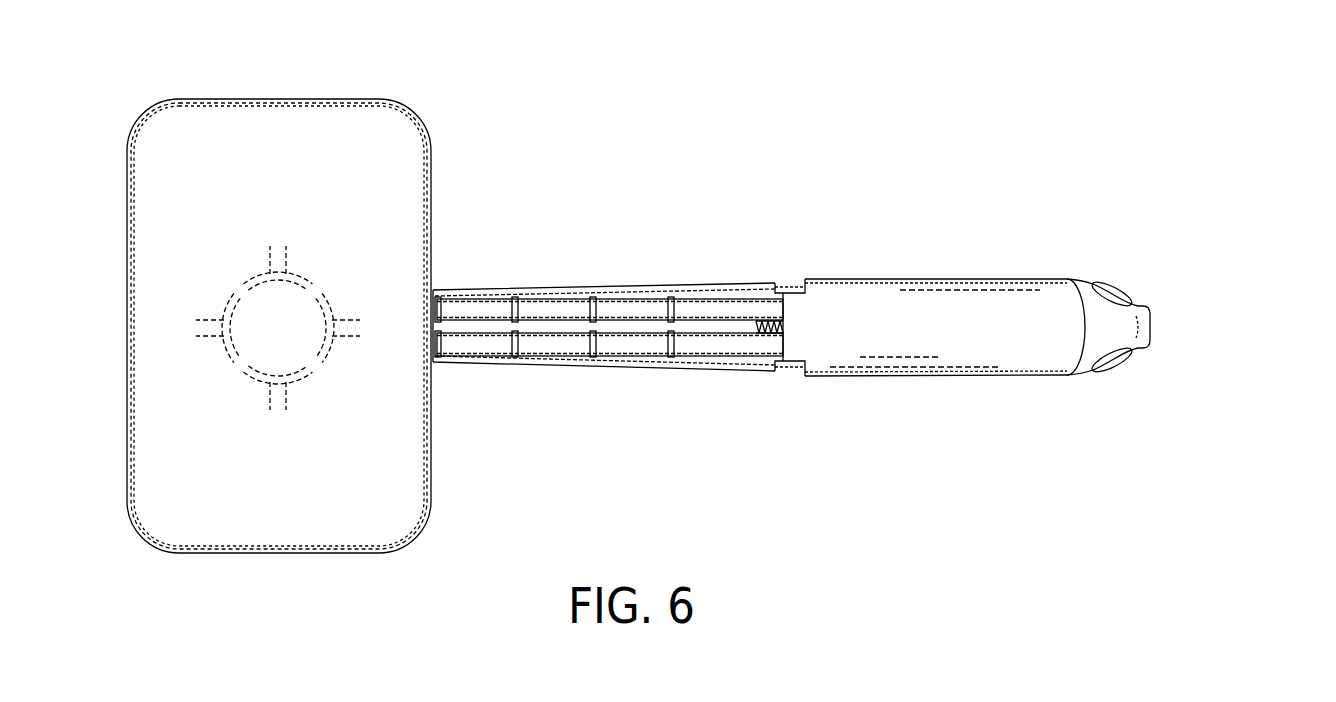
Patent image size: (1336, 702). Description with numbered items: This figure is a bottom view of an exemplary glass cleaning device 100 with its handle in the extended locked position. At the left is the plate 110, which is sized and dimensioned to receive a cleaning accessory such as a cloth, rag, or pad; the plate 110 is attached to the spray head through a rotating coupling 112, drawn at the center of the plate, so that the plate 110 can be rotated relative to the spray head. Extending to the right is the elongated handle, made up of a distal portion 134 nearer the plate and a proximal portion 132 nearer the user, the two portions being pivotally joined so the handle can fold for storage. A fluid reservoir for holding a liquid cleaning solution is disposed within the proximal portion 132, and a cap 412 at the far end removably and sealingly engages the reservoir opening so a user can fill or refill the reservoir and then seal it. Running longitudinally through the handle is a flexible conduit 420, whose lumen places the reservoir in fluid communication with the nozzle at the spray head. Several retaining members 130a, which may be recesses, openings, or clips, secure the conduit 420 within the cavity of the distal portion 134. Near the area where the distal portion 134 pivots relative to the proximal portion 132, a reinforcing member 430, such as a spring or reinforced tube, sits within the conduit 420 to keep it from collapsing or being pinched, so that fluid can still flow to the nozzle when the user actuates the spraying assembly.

The glass cleaning device 100 is at (333, 34).
The plate 110 is at (395, 110).
The rotating coupling 112 is at (315, 277).
The retaining members 130a is at (671, 298).
The distal portion 134 is at (467, 364).
The conduit 420 is at (702, 318).
The reinforcing member 430 is at (753, 322).
The proximal portion 132 is at (983, 300).
The cap 412 is at (1137, 327).